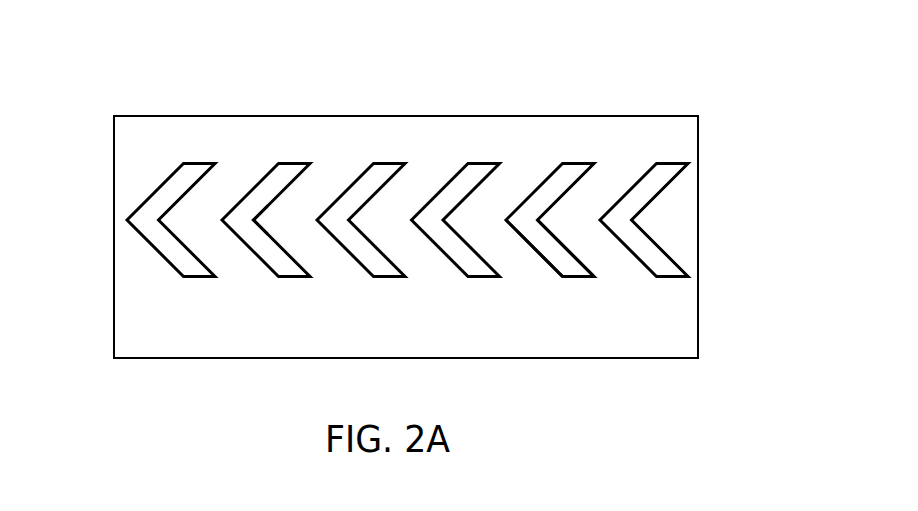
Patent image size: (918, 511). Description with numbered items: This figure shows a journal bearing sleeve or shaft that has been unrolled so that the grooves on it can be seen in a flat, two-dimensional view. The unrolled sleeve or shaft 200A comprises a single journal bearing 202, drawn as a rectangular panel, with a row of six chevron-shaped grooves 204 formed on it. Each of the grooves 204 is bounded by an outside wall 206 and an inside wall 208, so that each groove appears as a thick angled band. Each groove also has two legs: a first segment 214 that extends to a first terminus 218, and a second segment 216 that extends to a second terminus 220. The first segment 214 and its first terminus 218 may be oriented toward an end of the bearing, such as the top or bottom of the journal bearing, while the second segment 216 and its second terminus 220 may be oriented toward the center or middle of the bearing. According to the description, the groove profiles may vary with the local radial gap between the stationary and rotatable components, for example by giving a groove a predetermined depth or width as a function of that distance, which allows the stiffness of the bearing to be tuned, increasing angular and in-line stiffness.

The unrolled sleeve or shaft 200A is at (92, 107).
The single journal bearing 202 is at (672, 221).
The grooves 204 is at (235, 222).
The outside wall 206 is at (155, 250).
The inside wall 208 is at (225, 222).
The first segment 214 is at (558, 182).
The second segment 216 is at (556, 256).
The first terminus 218 is at (270, 163).
The second terminus 220 is at (558, 279).